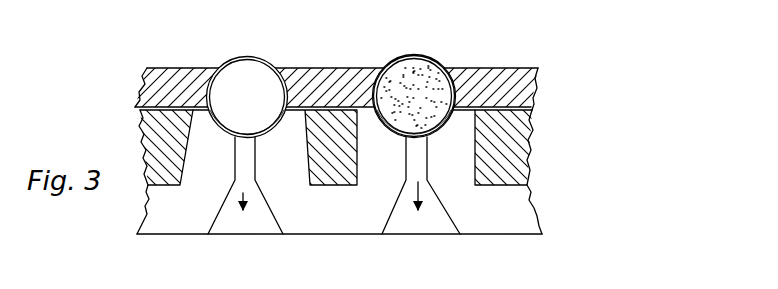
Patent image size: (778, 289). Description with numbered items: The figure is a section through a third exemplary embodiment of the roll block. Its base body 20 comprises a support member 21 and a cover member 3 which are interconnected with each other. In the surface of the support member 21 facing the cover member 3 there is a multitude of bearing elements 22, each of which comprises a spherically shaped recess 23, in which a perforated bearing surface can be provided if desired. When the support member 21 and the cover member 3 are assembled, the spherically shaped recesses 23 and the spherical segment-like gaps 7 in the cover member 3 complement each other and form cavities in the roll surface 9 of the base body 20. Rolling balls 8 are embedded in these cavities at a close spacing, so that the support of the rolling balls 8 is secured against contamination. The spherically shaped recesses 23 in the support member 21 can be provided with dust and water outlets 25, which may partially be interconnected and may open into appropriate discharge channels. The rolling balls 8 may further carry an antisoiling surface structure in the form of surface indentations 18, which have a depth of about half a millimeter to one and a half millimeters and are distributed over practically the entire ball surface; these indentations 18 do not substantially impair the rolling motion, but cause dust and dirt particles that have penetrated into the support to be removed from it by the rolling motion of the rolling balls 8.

The base body 20 is at (556, 66).
The cover member 3 is at (523, 91).
The support member 21 is at (516, 155).
The spherical segment-like gaps 7 is at (298, 76).
The rolling balls 8 is at (262, 77).
The roll surface 9 is at (502, 79).
The surface indentations 18 is at (410, 93).
The bearing elements 22 is at (271, 139).
The spherically shaped recesses 23 is at (222, 128).
The dust and water outlets 25 is at (268, 211).